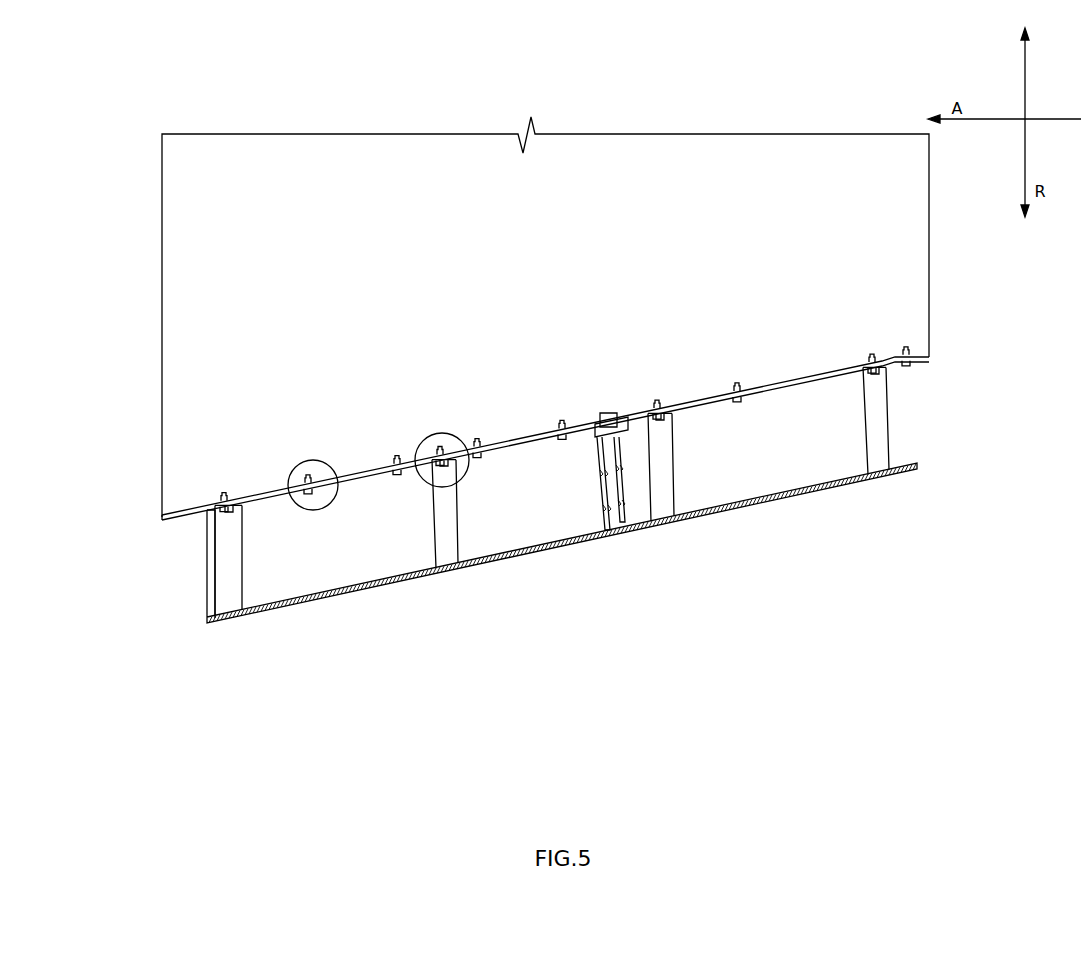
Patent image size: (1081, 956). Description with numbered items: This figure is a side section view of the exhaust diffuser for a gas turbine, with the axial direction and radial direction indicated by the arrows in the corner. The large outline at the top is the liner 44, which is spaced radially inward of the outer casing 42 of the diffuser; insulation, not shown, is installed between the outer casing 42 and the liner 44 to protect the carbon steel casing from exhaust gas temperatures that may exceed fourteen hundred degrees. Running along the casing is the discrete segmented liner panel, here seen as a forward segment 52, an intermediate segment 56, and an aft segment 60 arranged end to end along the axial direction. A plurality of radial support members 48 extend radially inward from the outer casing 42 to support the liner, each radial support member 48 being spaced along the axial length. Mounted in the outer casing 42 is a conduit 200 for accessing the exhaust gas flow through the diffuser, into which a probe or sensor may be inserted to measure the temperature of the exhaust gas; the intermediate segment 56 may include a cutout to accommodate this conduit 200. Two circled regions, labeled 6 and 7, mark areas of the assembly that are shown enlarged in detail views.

The detail view circle (FIG. 6) 6 is at (322, 455).
The detail view circle (FIG. 7) 7 is at (440, 430).
The outer casing 42 is at (474, 566).
The liner 44 is at (182, 513).
The radial support member 48 is at (227, 572).
The forward segment 52 is at (775, 382).
The intermediate segment 56 is at (537, 432).
The aft segment 60 is at (363, 470).
The conduit 200 is at (603, 493).